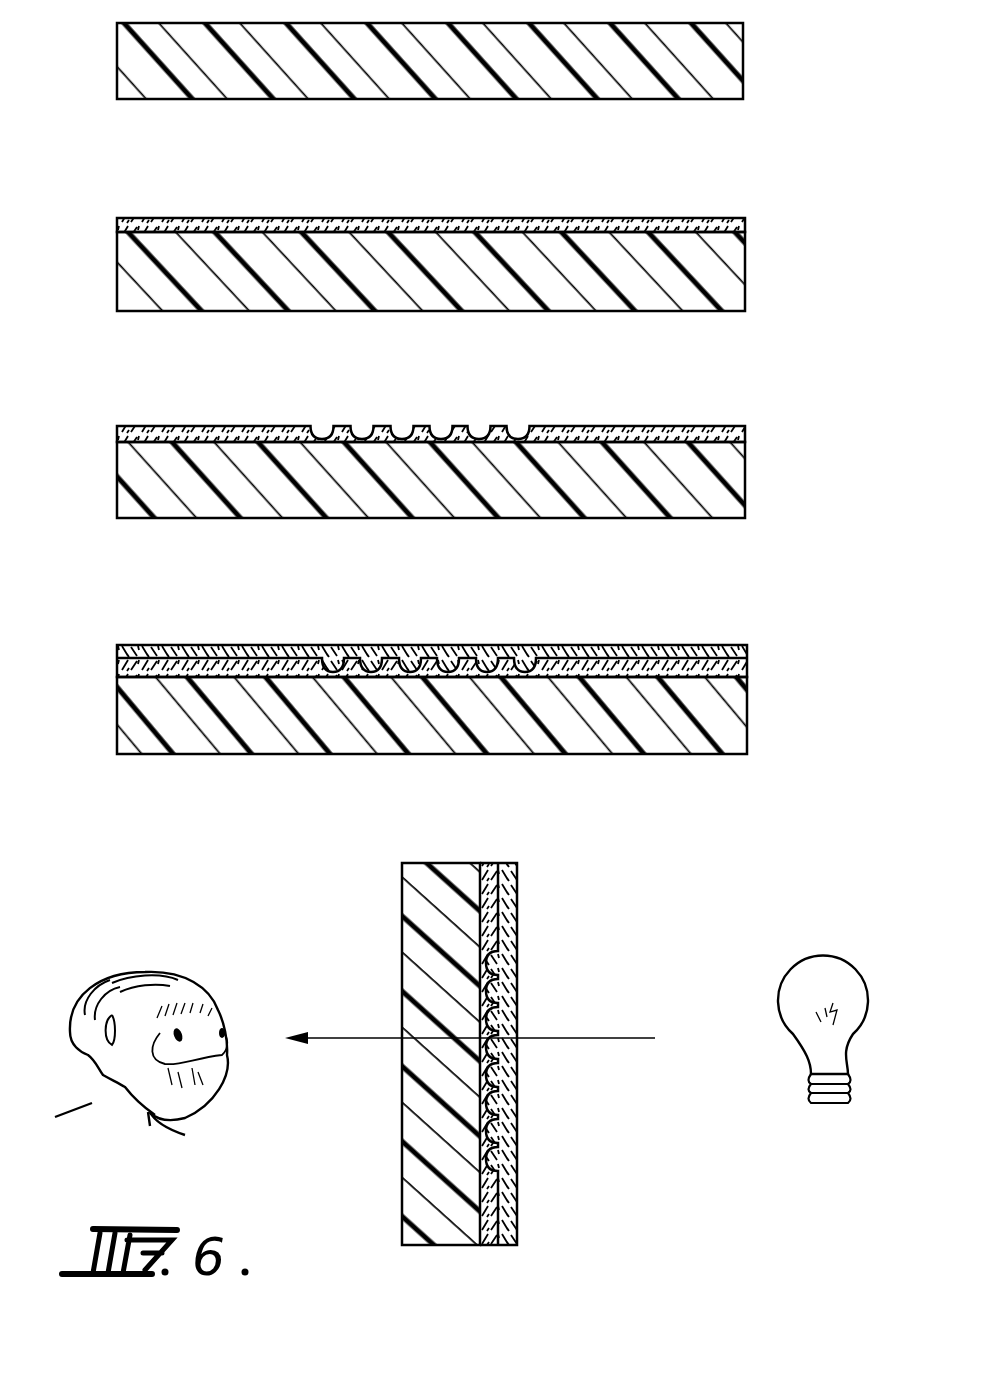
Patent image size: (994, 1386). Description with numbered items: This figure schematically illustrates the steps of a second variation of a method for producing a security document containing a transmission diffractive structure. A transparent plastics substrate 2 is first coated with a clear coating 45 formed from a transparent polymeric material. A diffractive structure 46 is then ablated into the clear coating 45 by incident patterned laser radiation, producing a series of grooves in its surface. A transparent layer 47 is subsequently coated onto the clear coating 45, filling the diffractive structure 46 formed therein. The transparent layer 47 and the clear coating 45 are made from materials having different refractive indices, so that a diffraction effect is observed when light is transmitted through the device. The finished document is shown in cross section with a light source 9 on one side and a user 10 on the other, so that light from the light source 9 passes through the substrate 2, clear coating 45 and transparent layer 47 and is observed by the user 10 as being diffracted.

The transparent plastics substrate 2 is at (743, 90).
The clear coating 45 is at (727, 218).
The diffractive structure 46 is at (336, 444).
The transparent layer 47 is at (740, 648).
The light source 9 is at (806, 986).
The user 10 is at (130, 990).